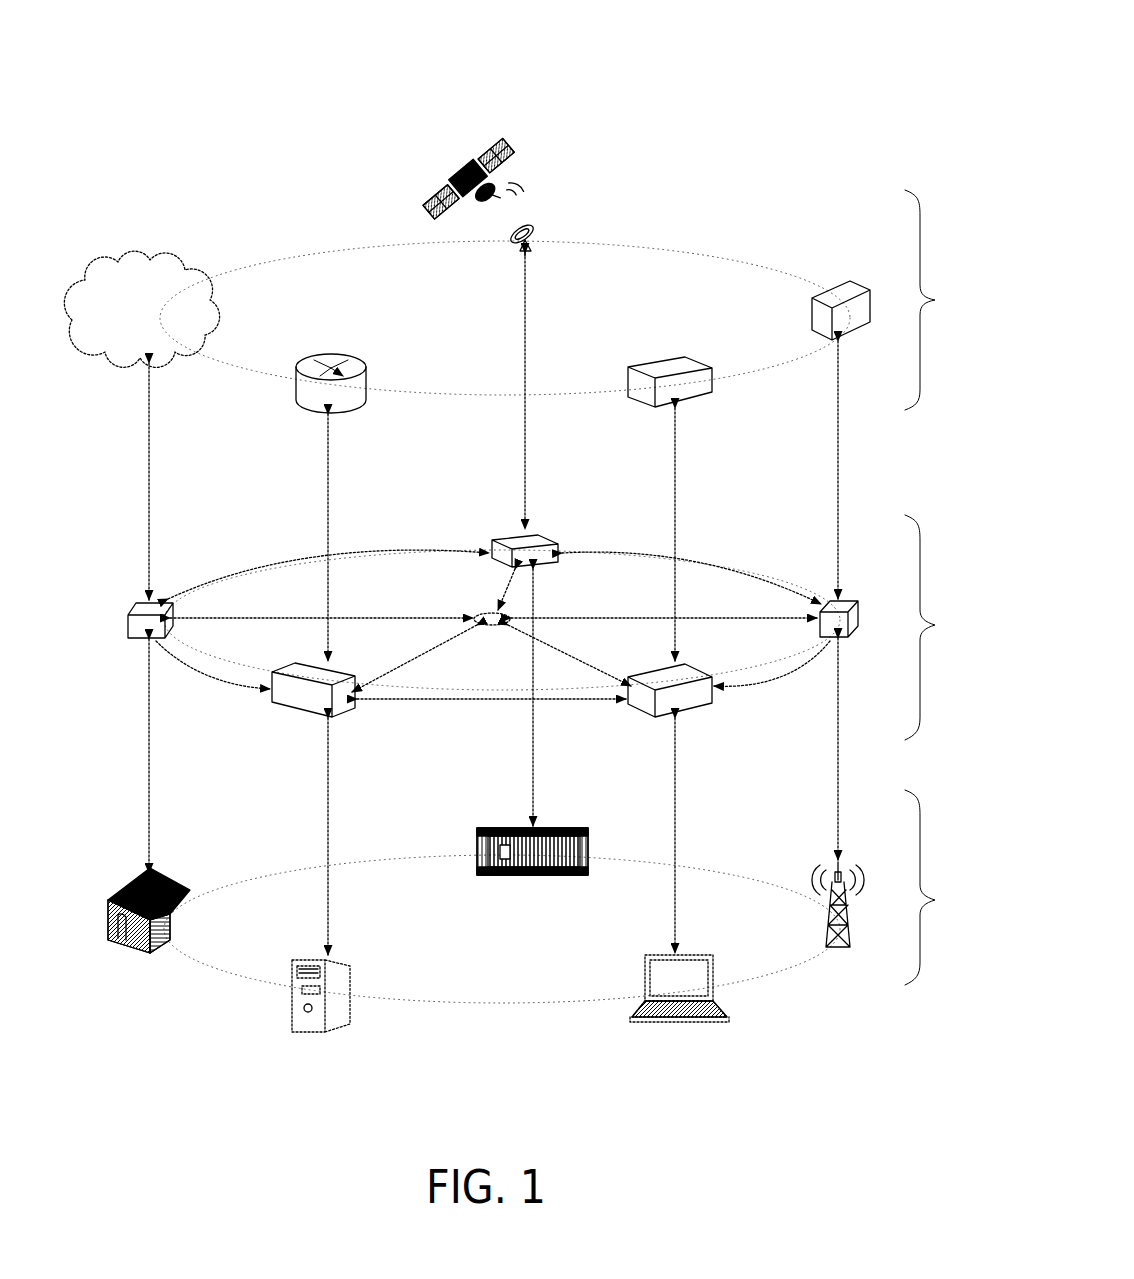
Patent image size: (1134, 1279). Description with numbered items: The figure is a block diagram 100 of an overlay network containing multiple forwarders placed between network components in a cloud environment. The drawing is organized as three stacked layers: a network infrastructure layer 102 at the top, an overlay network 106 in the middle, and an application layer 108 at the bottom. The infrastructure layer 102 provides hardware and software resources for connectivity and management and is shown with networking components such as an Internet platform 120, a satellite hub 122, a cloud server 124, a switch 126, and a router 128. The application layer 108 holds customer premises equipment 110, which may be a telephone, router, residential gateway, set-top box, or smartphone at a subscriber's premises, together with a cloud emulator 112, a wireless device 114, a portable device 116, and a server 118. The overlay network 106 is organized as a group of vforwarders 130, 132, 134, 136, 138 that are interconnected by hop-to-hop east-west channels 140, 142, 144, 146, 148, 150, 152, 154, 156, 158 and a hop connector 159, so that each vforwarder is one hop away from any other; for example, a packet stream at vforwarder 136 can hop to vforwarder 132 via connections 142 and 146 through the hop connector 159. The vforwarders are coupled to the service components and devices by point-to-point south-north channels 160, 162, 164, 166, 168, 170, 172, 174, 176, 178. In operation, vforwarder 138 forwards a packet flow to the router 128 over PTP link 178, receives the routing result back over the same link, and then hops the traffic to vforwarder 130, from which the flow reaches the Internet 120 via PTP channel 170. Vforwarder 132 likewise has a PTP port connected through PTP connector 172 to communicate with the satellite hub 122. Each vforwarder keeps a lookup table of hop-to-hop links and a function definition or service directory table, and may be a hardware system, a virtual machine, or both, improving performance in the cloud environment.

The block diagram 100 is at (652, 58).
The network infrastructure layer 102 is at (571, 300).
The overlay network 106 is at (573, 627).
The application layer 108 is at (575, 896).
The customer premises equipment 110 is at (166, 872).
The cloud emulator 112 is at (564, 830).
The wireless device 114 is at (848, 922).
The portable device 116 is at (643, 974).
The server 118 is at (350, 985).
The Internet platform 120 is at (136, 326).
The satellite hub 122 is at (538, 238).
The cloud server 124 is at (848, 283).
The switch 126 is at (710, 382).
The router 128 is at (352, 412).
The vforwarder 130 is at (126, 624).
The vforwarder 132 is at (550, 532).
The vforwarder 134 is at (880, 602).
The vforwarder 136 is at (706, 712).
The vforwarder 138 is at (296, 714).
The HTH east-west channel 140 is at (430, 616).
The HTH connection 142 is at (505, 590).
The HTH east-west channel 144 is at (640, 616).
The HTH connection 146 is at (548, 642).
The HTH east-west channel 148 is at (418, 650).
The HTH east-west channel 150 is at (296, 563).
The HTH east-west channel 152 is at (786, 575).
The HTH east-west channel 154 is at (800, 660).
The HTH east-west channel 156 is at (520, 702).
The HTH east-west channel 158 is at (190, 672).
The hop connector 159 is at (494, 627).
The PTP south-north channel 160 is at (146, 778).
The PTP south-north channel 162 is at (536, 718).
The PTP south-north channel 164 is at (835, 758).
The PTP south-north channel 166 is at (678, 795).
The PTP south-north channel 168 is at (326, 797).
The PTP channel 170 is at (146, 498).
The PTP connector 172 is at (528, 292).
The PTP south-north channel 174 is at (835, 516).
The PTP south-north channel 176 is at (672, 508).
The PTP link 178 is at (331, 470).